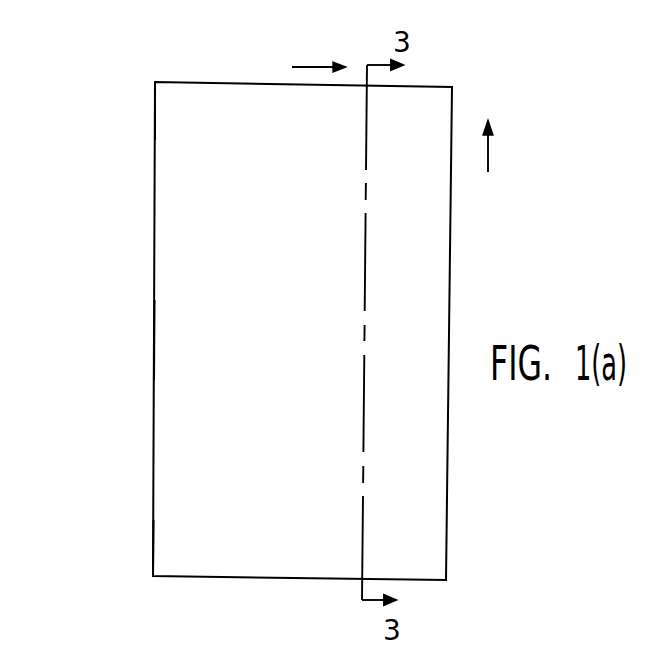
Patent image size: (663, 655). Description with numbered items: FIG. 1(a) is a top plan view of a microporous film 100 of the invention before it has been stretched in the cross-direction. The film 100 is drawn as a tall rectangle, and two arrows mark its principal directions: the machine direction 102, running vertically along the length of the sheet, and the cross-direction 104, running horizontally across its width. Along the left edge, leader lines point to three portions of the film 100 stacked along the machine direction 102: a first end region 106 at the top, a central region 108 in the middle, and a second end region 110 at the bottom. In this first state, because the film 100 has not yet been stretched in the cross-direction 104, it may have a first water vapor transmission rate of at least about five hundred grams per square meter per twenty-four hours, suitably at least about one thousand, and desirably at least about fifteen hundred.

The film 100 is at (452, 87).
The machine direction 102 is at (509, 146).
The cross-direction 104 is at (313, 55).
The first end region 106 is at (155, 113).
The central region 108 is at (154, 340).
The second end region 110 is at (153, 561).